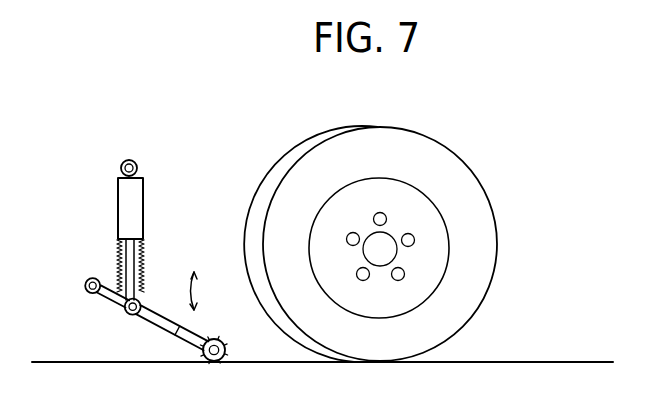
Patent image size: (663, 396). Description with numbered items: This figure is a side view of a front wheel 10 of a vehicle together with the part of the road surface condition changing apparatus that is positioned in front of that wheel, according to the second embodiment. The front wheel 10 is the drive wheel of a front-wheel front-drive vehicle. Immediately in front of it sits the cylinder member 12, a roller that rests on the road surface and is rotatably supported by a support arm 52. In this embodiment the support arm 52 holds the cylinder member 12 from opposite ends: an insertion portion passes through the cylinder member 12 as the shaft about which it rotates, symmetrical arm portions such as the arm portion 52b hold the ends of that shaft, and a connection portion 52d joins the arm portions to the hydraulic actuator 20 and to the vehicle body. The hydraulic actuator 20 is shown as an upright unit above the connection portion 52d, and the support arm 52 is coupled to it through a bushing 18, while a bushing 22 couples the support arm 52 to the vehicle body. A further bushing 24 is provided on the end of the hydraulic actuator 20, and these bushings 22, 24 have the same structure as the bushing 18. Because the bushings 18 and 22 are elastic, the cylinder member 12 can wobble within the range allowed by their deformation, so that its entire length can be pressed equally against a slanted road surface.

The front wheel 10 is at (463, 178).
The cylinder member 12 is at (226, 343).
The bushing 18 is at (123, 312).
The hydraulic actuator 20 is at (132, 216).
The bushing 22 is at (89, 279).
The bushing 24 is at (138, 169).
The support arm 52 is at (173, 313).
The arm portion 52b is at (212, 302).
The connection portion 52d is at (108, 298).